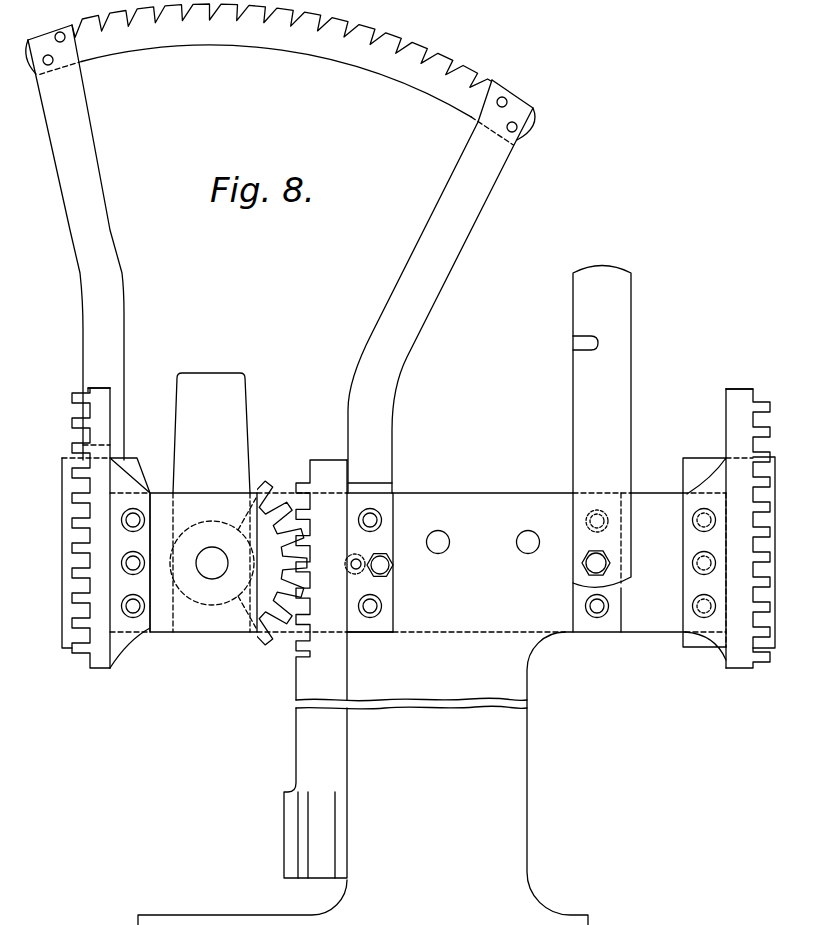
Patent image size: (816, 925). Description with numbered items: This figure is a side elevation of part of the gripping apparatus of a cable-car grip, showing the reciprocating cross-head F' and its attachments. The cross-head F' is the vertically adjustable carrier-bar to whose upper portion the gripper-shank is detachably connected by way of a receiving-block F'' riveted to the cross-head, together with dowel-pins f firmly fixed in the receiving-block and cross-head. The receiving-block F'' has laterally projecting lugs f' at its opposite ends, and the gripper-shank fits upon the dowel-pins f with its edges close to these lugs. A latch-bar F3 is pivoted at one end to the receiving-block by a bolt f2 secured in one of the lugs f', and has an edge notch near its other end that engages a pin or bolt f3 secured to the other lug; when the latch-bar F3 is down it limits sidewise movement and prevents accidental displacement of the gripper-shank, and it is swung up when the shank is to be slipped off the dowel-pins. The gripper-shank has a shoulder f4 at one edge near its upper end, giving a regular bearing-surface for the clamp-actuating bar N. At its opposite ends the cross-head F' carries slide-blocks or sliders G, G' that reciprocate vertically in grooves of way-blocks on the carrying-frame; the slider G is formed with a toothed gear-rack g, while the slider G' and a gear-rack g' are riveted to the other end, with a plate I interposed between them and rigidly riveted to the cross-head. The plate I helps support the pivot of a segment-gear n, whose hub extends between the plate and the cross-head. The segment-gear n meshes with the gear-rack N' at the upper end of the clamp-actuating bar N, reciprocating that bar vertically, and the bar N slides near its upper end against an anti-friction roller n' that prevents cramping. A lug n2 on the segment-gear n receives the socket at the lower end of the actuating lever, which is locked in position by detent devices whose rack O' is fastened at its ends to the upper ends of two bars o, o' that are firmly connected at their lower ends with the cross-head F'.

The bar o is at (75, 242).
The bar o' is at (277, 74).
The rack O' is at (441, 286).
The gear-rack g' is at (100, 408).
The gear-rack g is at (728, 408).
The slider G' is at (75, 532).
The slider G is at (732, 536).
The lug n2 is at (211, 433).
The segment-gear n is at (277, 563).
The anti-friction roller n' is at (342, 561).
The gear-rack N' is at (321, 580).
The clamp-actuating bar N is at (315, 793).
The plate I is at (195, 628).
The dowel-pins f is at (419, 563).
The lugs f' is at (378, 562).
The bolt f2 is at (609, 548).
The pin or bolt f3 is at (382, 556).
The shoulder f4 is at (370, 645).
The cross-head F' is at (363, 778).
The receiving-block F'' is at (418, 563).
The latch-bar F3 is at (602, 427).